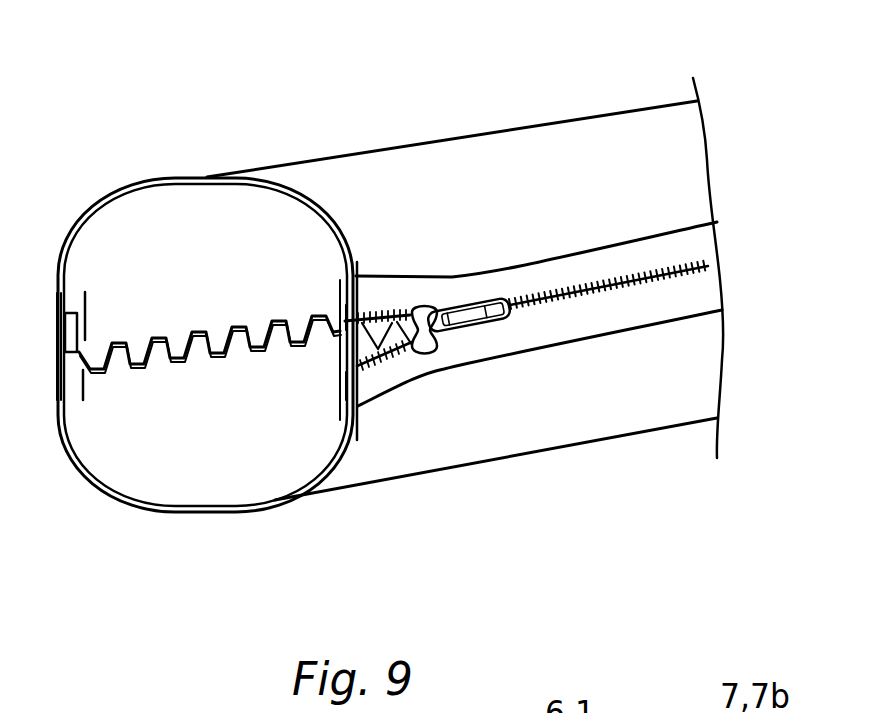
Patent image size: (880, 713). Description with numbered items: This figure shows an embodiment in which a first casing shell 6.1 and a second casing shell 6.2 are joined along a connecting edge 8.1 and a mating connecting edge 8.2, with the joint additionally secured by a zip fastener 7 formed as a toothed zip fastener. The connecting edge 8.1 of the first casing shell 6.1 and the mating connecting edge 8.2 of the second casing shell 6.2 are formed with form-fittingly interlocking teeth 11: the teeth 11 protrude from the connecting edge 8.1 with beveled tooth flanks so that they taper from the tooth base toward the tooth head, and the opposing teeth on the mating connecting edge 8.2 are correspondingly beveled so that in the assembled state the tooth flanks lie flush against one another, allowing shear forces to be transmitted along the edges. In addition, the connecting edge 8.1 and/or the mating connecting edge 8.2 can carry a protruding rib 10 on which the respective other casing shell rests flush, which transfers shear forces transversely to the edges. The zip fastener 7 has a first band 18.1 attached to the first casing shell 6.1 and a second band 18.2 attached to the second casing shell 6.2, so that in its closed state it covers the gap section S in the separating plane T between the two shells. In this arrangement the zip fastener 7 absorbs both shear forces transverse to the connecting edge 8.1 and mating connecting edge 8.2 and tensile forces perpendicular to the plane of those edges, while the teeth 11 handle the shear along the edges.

The first casing shell 6.1 is at (563, 142).
The second casing shell 6.2 is at (616, 407).
The zip fastener 7 is at (648, 240).
The connecting edge 8.1 is at (83, 343).
The mating connecting edge 8.2 is at (83, 373).
The protruding rib 10 is at (67, 335).
The teeth 11 is at (143, 333).
The first band 18.1 is at (700, 243).
The second band 18.2 is at (710, 305).
The gap section S is at (404, 302).
The separating plane T is at (373, 363).